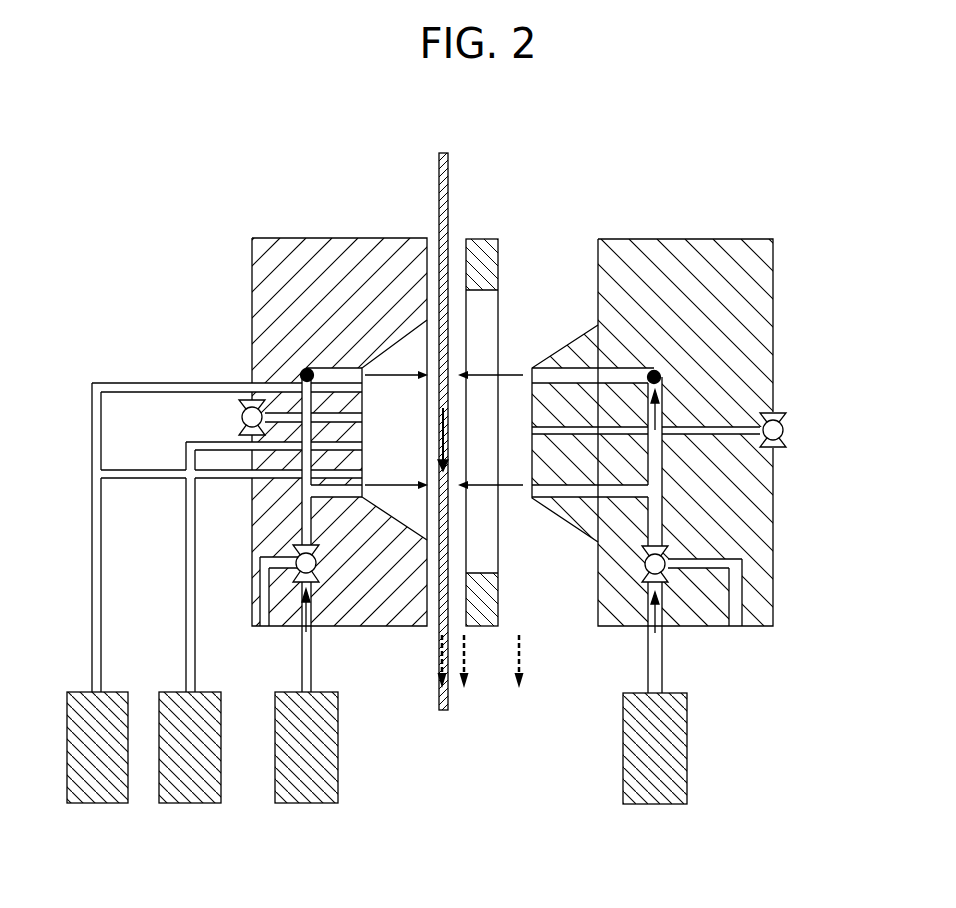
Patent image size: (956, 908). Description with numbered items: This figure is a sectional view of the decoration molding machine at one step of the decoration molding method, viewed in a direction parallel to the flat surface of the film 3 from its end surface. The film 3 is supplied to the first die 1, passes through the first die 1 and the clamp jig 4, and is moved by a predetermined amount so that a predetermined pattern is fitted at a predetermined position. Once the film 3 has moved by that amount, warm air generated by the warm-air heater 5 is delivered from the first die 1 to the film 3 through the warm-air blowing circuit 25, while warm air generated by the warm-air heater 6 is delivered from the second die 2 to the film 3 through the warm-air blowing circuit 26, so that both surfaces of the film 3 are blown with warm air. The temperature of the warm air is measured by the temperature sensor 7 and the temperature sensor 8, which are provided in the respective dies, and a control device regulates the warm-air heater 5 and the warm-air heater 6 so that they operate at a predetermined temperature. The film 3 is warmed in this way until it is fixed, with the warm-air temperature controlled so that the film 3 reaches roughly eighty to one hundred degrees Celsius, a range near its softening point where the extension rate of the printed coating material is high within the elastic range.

The first die 1 is at (286, 250).
The second die 2 is at (703, 245).
The film 3 is at (444, 184).
The clamp jig 4 is at (488, 265).
The warm-air heater 5 is at (323, 732).
The warm-air heater 6 is at (672, 729).
The temperature sensor 7 is at (307, 369).
The temperature sensor 8 is at (660, 377).
The warm-air blowing circuit 25 is at (313, 651).
The warm-air blowing circuit 26 is at (662, 647).